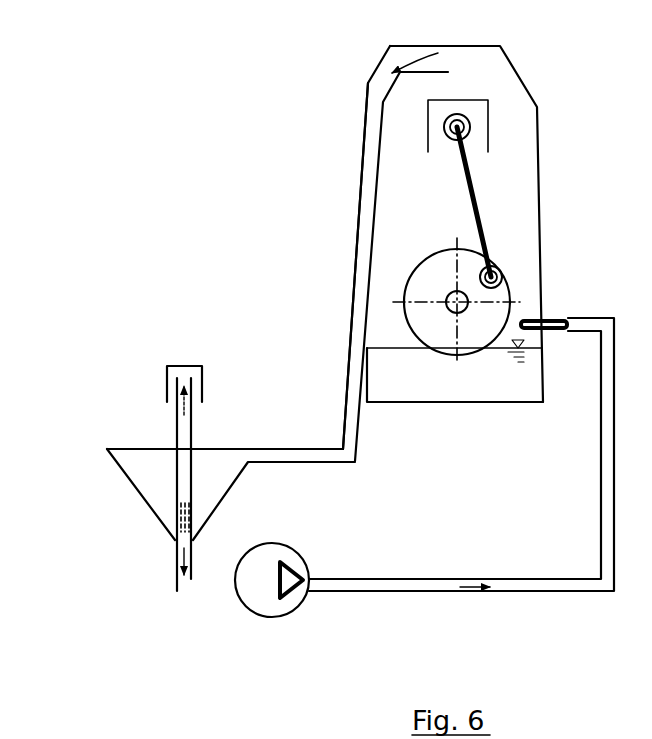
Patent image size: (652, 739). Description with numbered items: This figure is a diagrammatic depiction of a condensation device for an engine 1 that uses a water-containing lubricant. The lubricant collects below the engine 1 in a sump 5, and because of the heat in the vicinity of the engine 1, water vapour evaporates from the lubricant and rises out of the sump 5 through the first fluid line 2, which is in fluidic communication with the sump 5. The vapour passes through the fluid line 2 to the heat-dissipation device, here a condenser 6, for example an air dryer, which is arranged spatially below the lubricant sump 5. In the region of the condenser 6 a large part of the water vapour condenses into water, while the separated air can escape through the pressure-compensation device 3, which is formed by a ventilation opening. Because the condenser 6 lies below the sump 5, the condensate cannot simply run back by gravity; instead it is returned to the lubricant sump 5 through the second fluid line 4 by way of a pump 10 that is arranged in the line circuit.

The engine 1 is at (405, 236).
The first fluid line 2 is at (351, 332).
The pressure-compensation device 3 is at (180, 437).
The second fluid line 4 is at (518, 585).
The sump 5 is at (483, 383).
The condenser 6 is at (148, 475).
The pump 10 is at (257, 592).